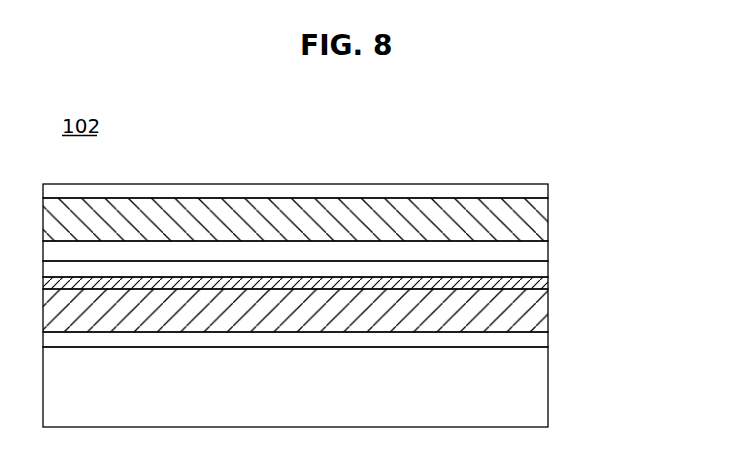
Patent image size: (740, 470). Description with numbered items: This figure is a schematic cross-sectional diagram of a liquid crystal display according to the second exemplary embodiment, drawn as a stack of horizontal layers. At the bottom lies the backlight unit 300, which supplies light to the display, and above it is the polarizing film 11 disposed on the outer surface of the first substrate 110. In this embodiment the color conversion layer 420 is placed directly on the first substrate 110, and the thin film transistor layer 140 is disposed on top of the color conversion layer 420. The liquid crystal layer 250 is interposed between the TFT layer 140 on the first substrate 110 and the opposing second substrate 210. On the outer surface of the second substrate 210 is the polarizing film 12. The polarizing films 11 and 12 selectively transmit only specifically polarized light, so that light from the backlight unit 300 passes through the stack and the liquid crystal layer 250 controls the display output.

The polarizing film 12 is at (535, 192).
The second substrate 210 is at (538, 220).
The liquid crystal layer 250 is at (538, 250).
The thin film transistor layer 140 is at (538, 268).
The color conversion layer 420 is at (540, 285).
The first substrate 110 is at (540, 312).
The polarizing film 11 is at (537, 338).
The backlight unit 300 is at (535, 388).